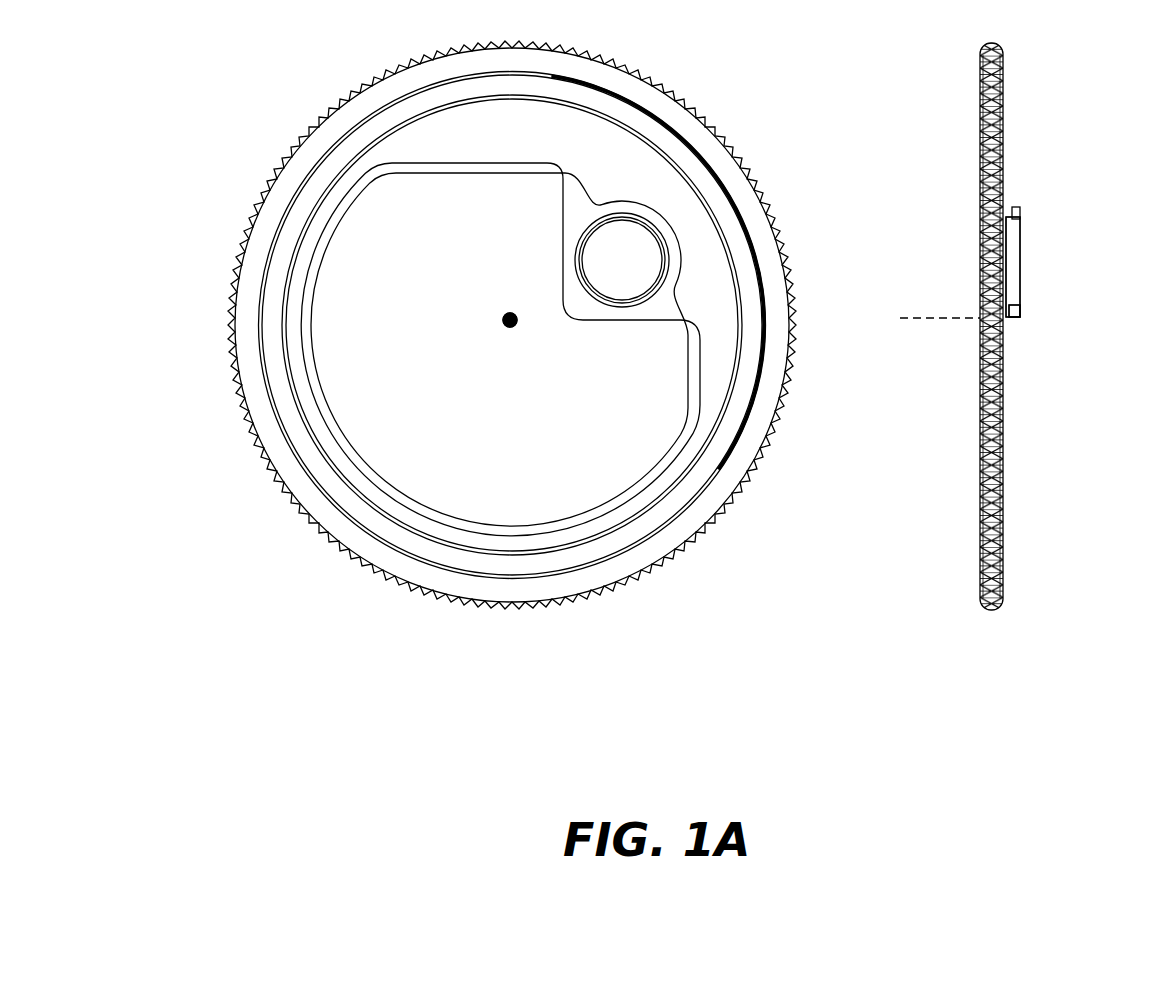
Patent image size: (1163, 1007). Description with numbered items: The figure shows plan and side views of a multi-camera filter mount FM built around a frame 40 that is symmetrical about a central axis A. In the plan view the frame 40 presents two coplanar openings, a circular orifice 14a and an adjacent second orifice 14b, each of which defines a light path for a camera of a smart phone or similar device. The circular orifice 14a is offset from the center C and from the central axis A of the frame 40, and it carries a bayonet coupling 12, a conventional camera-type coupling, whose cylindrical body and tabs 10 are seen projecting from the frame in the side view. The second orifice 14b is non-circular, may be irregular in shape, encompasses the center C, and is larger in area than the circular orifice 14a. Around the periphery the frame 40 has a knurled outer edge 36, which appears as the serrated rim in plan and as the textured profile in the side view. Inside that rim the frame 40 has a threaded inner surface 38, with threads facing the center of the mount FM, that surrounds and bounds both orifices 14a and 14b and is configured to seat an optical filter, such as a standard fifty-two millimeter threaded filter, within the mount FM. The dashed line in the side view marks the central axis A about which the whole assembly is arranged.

The multi-camera filter mount FM is at (295, 160).
The frame 40 is at (708, 127).
The threaded inner surface 38 is at (717, 465).
The circular orifice 14a is at (637, 278).
The second orifice 14b is at (482, 319).
The center C is at (517, 324).
The knurled outer edge 36 is at (1000, 50).
The bayonet coupling 12 is at (1017, 216).
The tabs 10 is at (1018, 302).
The central axis A is at (907, 318).